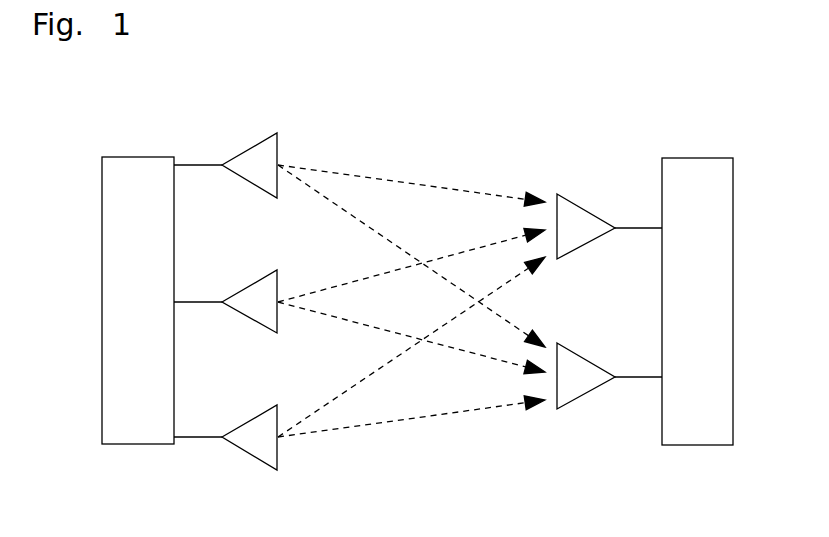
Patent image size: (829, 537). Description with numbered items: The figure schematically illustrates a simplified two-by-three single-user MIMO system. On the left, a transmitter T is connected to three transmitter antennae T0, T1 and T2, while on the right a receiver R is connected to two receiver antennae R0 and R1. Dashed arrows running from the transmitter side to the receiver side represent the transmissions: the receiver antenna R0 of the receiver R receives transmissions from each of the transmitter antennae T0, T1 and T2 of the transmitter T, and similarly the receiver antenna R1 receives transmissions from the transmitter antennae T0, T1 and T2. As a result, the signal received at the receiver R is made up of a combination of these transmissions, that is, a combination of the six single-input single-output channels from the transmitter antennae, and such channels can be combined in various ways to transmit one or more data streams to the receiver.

The transmitter T is at (146, 315).
The receiver R is at (705, 314).
The transmitter antenna T0 is at (225, 165).
The transmitter antenna T1 is at (225, 301).
The transmitter antenna T2 is at (225, 437).
The receiver antenna R0 is at (609, 226).
The receiver antenna R1 is at (609, 376).